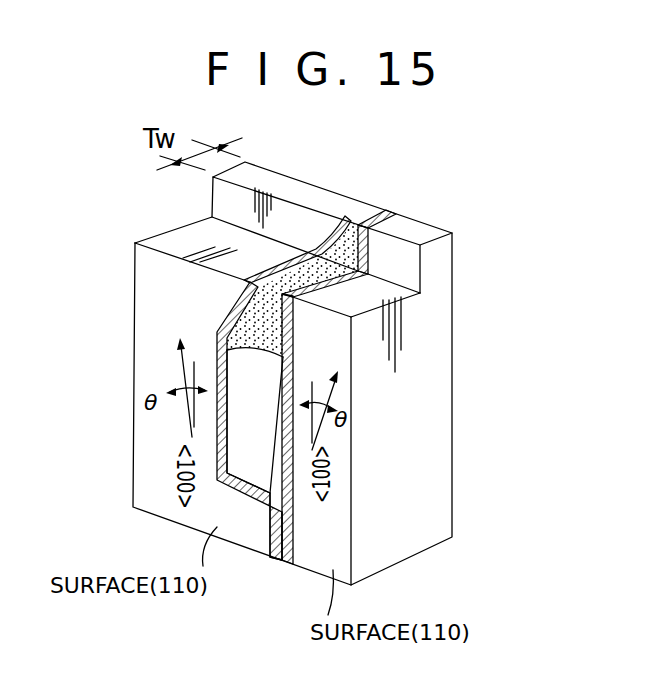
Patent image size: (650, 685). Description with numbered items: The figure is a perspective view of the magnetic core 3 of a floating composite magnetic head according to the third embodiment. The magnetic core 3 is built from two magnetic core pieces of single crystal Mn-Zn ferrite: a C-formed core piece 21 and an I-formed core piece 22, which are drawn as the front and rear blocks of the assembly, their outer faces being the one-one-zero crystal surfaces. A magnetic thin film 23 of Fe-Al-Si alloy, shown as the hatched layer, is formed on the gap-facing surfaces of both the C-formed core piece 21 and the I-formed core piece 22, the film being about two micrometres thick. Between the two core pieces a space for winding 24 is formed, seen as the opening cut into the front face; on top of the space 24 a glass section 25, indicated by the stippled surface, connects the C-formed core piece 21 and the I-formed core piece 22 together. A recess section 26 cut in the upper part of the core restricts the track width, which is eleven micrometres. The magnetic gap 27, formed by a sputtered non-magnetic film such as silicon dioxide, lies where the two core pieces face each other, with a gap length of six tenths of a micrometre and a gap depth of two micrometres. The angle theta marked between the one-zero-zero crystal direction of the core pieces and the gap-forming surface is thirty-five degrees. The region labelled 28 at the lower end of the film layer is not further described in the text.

The magnetic core 3 is at (482, 268).
The C-formed core piece 21 is at (145, 498).
The I-formed core piece 22 is at (442, 438).
The magnetic thin film 23 is at (277, 553).
The space for winding 24 is at (233, 410).
The glass section 25 is at (245, 313).
The recess section 26 is at (398, 293).
The magnetic gap 27 is at (370, 209).
The bottom portion 28 is at (263, 543).